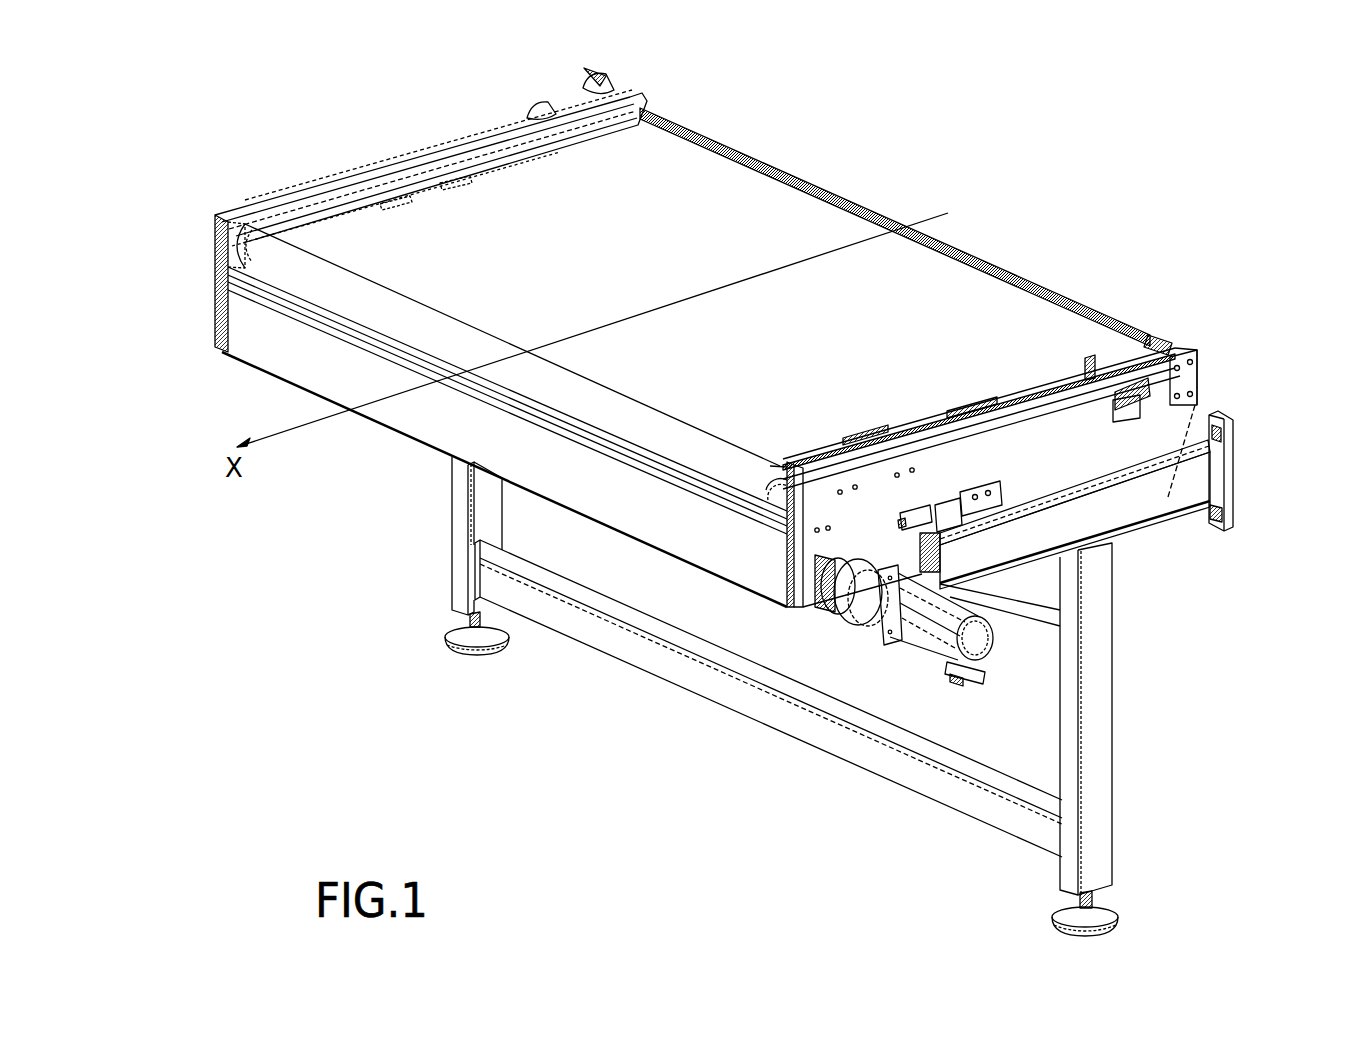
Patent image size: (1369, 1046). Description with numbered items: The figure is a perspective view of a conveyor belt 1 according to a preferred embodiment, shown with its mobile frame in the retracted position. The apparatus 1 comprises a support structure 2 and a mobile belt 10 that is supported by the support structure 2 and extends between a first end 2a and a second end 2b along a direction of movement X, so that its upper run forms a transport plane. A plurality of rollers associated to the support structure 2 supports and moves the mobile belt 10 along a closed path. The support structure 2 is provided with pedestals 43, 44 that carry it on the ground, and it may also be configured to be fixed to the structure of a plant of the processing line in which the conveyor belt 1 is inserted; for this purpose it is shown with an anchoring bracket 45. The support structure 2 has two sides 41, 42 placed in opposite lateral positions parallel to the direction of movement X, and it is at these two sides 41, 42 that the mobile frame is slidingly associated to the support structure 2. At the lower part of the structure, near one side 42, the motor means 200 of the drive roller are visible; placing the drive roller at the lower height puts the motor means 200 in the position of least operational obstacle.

The conveyor belt 1 is at (1187, 140).
The support structure 2 is at (1221, 383).
The first end 2a is at (773, 166).
The second end 2b is at (360, 292).
The mobile belt 10 is at (781, 242).
The side of the support structure 41 is at (215, 240).
The side of the support structure 42 is at (800, 513).
The pedestal 43 is at (462, 537).
The pedestal 44 is at (1090, 725).
The anchoring bracket 45 is at (1183, 490).
The motor means 200 is at (878, 641).